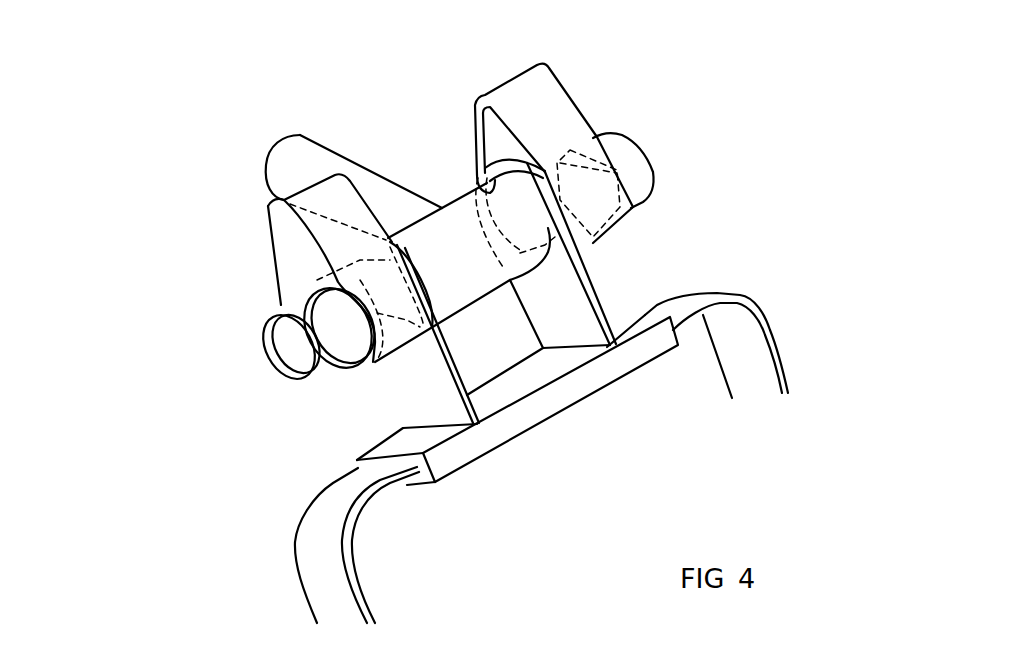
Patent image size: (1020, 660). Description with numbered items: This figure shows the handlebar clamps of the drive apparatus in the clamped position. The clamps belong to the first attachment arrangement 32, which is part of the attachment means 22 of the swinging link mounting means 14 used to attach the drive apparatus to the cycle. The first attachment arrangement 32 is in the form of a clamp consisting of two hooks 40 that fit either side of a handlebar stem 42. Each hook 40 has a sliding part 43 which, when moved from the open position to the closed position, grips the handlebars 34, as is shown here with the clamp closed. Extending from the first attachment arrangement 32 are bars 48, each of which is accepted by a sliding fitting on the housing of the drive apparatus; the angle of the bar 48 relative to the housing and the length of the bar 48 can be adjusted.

The swinging link mounting means 14 is at (771, 195).
The attachment means 22 is at (660, 113).
The first attachment arrangement 32 is at (557, 420).
The handlebars 34 is at (265, 338).
The hook 40 is at (344, 381).
The handlebar stem 42 is at (297, 158).
The sliding part 43 is at (290, 245).
The bar 48 is at (287, 0).